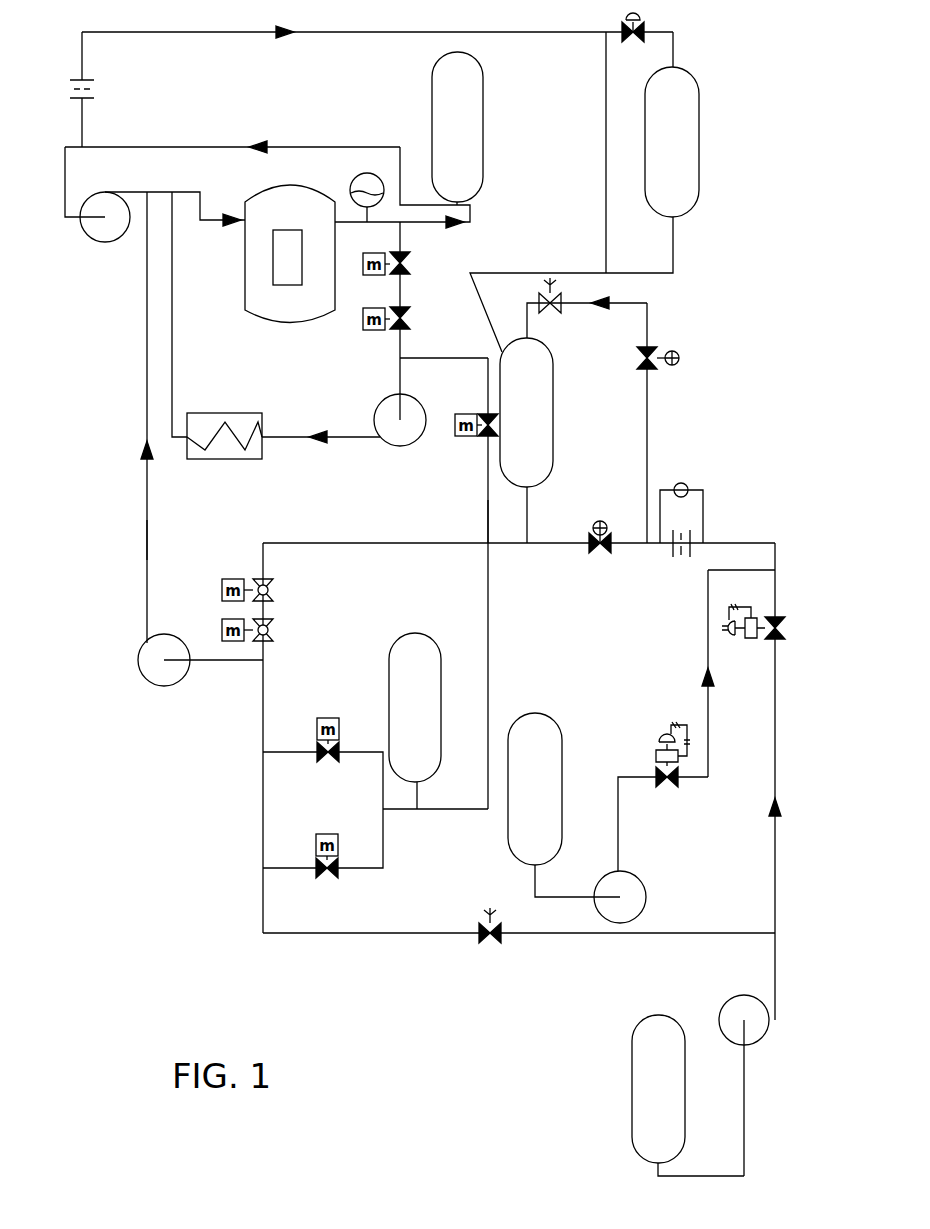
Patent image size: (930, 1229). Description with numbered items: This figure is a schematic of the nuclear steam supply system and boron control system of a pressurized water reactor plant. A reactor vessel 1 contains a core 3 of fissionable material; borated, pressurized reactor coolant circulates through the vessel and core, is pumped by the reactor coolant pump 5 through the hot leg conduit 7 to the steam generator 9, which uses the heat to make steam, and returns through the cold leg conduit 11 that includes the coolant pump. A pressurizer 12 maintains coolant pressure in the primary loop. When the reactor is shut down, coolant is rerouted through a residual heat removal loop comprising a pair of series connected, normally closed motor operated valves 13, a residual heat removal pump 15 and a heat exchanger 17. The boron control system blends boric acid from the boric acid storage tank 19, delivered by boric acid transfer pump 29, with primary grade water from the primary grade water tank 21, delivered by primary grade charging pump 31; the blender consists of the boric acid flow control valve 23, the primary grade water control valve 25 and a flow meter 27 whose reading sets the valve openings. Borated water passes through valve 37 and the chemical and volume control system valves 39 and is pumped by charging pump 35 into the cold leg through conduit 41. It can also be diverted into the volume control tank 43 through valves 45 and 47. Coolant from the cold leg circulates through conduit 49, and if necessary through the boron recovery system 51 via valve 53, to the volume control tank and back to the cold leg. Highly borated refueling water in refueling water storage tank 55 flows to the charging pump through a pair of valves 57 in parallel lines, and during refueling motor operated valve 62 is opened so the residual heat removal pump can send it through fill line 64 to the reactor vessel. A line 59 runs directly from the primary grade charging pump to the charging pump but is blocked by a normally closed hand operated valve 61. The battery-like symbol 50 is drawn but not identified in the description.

The reactor vessel 1 is at (336, 240).
The core 3 is at (295, 270).
The reactor coolant pump 5 is at (117, 240).
The hot leg conduit 7 is at (434, 224).
The steam generator 9 is at (480, 146).
The cold leg conduit 11 is at (203, 147).
The pressurizer 12 is at (357, 180).
The motor operated valves 13 is at (404, 306).
The residual heat removal pump 15 is at (404, 401).
The heat exchanger 17 is at (224, 413).
The boric acid storage tank 19 is at (560, 730).
The primary grade water tank 21 is at (685, 1093).
The boric acid flow control valve 23 is at (670, 783).
The primary grade water control valve 25 is at (771, 637).
The flow meter 27 is at (703, 527).
The boric acid transfer pump 29 is at (640, 884).
The primary grade charging pump 31 is at (725, 1010).
The charging pump 35 is at (172, 686).
The valve 37 is at (601, 554).
The chemical and volume control system valves 39 is at (272, 628).
The conduit 41 is at (146, 548).
The volume control tank 43 is at (552, 368).
The valve 45 is at (665, 366).
The valve 47 is at (560, 303).
The conduit 49 is at (563, 33).
The power source 50 is at (85, 86).
The boron recovery system 51 is at (699, 109).
The valve 53 is at (640, 32).
The refueling water storage tank 55 is at (441, 709).
The valves 57 is at (335, 750).
The line 59 is at (540, 935).
The hand operated valve 61 is at (486, 938).
The motor operated valve 62 is at (484, 416).
The fill line 64 is at (486, 506).